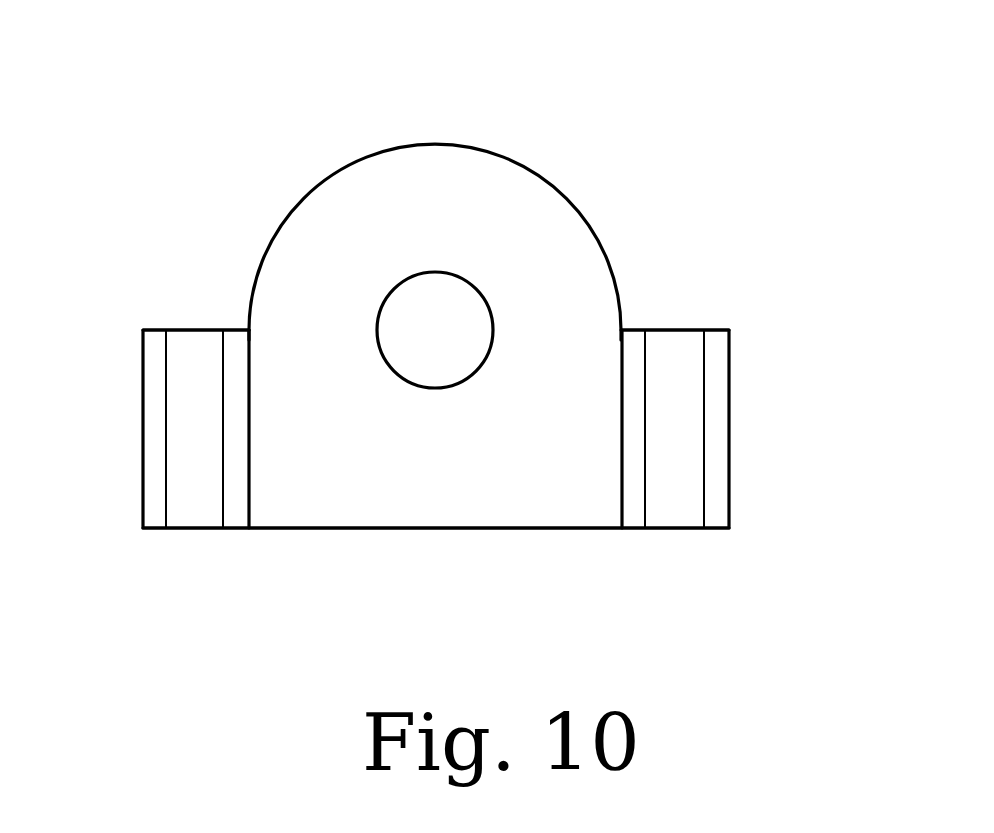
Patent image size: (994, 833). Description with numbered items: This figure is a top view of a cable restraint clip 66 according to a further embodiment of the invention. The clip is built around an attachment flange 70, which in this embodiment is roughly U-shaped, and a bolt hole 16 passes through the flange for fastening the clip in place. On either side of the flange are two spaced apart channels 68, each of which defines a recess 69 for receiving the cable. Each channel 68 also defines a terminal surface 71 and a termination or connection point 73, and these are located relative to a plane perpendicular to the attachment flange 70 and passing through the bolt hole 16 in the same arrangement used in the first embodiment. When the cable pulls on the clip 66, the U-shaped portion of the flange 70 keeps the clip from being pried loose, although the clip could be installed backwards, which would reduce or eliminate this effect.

The bolt hole 16 is at (443, 298).
The restraint clip 66 is at (616, 224).
The channel 68 is at (143, 407).
The recess 69 is at (187, 490).
The attachment flange 70 is at (322, 456).
The terminal surface 71 is at (155, 330).
The connection point 73 is at (248, 330).